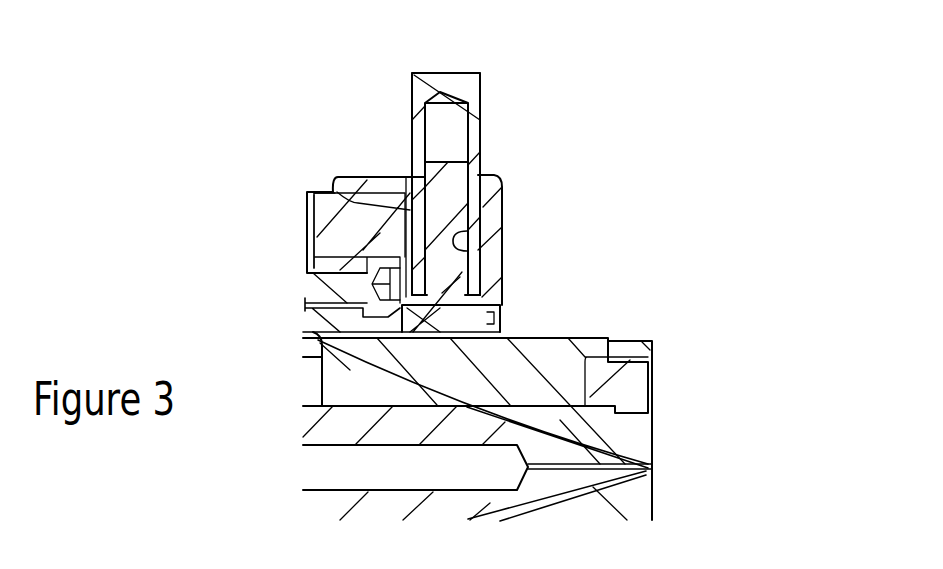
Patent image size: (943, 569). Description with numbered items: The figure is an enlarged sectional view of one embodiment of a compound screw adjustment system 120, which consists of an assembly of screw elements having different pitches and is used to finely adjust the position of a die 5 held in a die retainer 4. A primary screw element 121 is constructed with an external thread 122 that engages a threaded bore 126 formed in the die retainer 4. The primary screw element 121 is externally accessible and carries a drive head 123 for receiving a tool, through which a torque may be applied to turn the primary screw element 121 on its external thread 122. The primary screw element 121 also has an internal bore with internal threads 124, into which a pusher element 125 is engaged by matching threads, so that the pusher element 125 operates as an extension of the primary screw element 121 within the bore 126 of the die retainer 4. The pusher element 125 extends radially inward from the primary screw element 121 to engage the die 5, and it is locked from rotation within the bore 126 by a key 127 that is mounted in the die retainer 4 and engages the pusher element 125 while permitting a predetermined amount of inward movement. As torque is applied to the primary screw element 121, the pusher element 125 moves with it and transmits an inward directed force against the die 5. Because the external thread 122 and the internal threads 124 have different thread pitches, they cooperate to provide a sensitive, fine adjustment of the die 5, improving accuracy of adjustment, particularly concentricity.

The die retainer 4 is at (358, 226).
The die 5 is at (567, 337).
The compound screw adjustment system 120 is at (388, 142).
The primary screw element 121 is at (480, 143).
The external thread 122 is at (480, 215).
The drive head 123 is at (462, 70).
The internal threads 124 is at (482, 245).
The pusher element 125 is at (447, 280).
The threaded bore 126 is at (337, 188).
The key 127 is at (313, 343).